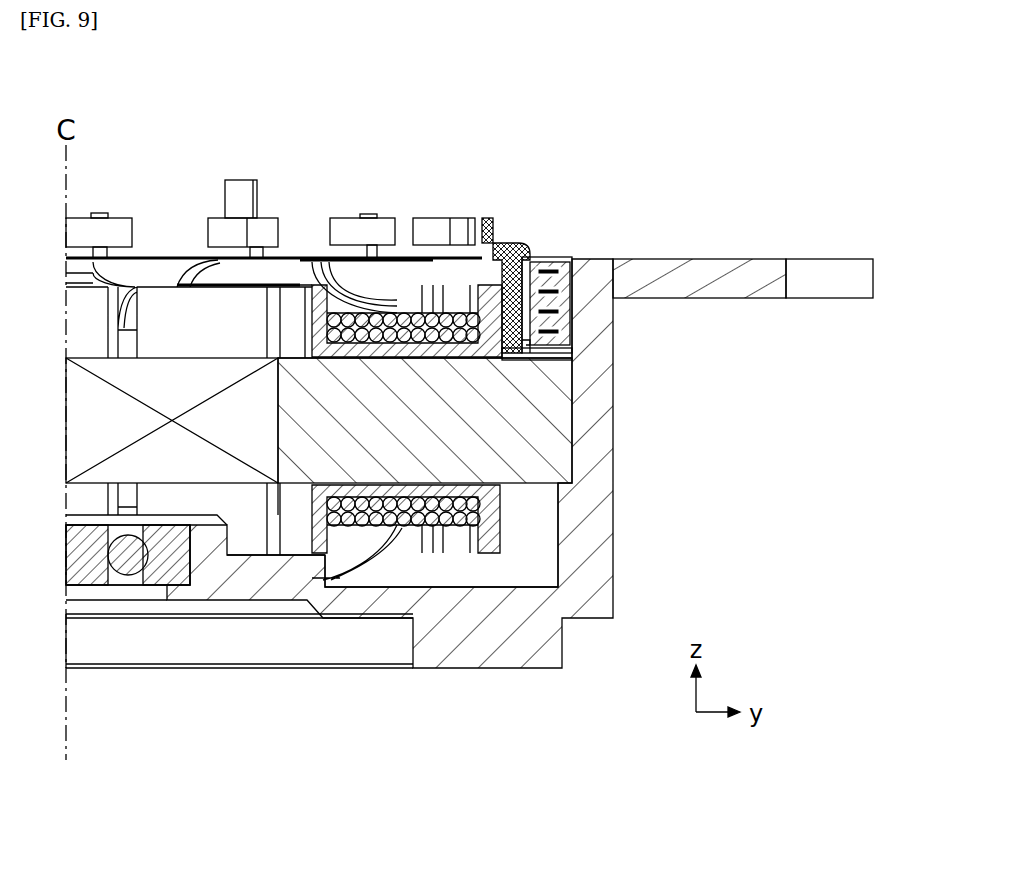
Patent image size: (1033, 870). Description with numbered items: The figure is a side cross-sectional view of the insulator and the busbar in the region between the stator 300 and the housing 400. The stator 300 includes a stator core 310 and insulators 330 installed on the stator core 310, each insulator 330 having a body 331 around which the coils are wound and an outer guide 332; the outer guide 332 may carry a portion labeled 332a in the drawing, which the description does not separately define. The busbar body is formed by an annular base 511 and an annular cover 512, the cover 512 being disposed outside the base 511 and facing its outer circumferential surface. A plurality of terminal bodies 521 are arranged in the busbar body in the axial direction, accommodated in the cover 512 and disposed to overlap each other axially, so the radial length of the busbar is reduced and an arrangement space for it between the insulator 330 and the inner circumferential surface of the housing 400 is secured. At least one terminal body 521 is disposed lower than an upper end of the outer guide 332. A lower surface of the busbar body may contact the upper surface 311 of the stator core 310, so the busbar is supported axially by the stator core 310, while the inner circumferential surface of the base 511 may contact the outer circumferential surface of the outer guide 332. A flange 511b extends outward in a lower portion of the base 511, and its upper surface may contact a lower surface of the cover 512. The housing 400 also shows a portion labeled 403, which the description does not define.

The stator 300 is at (522, 502).
The stator core 310 is at (540, 468).
The upper surface of the stator core 311 is at (513, 360).
The insulator 330 is at (417, 131).
The body 331 is at (335, 262).
The outer guide 332 is at (443, 258).
The protrusion of bearing holder 332a is at (474, 258).
The housing 400 is at (624, 458).
The housing flange 403 is at (640, 259).
The base 511 is at (500, 259).
The flange 511b is at (567, 349).
The cover 512 is at (556, 257).
The terminal body 521 is at (563, 332).